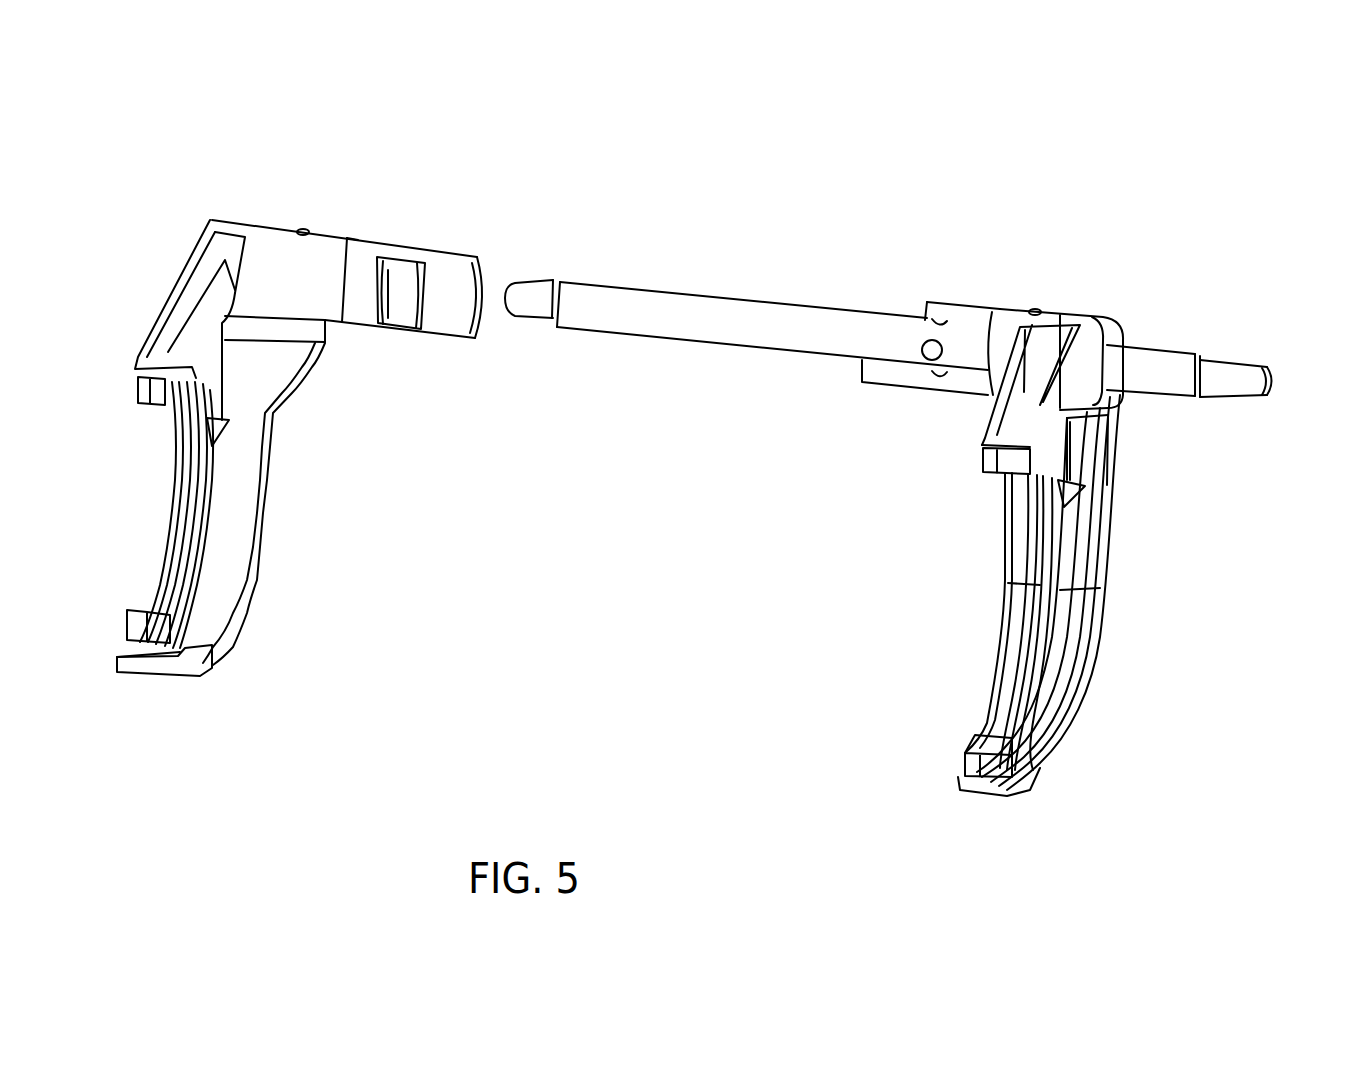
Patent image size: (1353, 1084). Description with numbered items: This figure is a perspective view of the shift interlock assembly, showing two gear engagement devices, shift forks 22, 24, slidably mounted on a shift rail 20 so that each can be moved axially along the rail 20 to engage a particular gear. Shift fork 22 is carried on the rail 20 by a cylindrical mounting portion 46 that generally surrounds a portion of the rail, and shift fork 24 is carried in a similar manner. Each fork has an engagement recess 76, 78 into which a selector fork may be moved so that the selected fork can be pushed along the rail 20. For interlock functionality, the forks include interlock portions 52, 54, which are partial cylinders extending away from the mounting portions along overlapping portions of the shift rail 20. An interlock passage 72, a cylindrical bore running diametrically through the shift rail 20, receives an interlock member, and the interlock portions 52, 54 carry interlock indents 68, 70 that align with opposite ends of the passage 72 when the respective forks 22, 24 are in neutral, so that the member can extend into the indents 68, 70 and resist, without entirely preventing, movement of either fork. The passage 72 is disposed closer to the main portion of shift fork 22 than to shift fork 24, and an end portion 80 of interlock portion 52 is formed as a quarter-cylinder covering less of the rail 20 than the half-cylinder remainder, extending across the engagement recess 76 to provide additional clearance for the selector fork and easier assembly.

The shift rail 20 is at (1140, 370).
The shift fork 22 is at (1104, 487).
The shift fork 24 is at (278, 514).
The cylindrical mounting portion 46 is at (1035, 306).
The interlock portion 52 is at (926, 267).
The interlock portion 54 is at (365, 247).
The interlock indent 68 is at (932, 300).
The interlock indent 70 is at (398, 277).
The interlock passage 72 is at (930, 360).
The engagement recess 76 is at (932, 398).
The engagement recess 78 is at (402, 305).
The end portion 80 is at (768, 329).